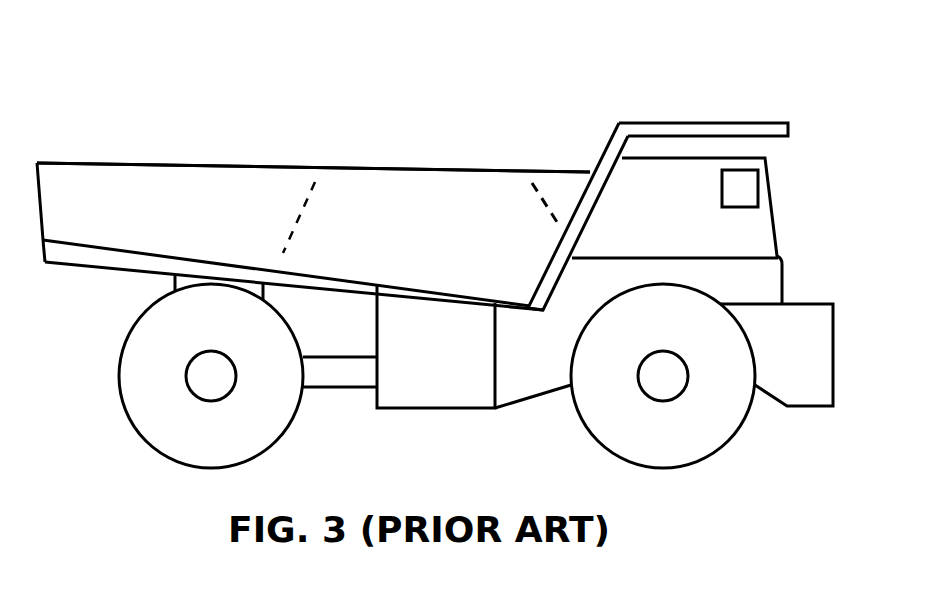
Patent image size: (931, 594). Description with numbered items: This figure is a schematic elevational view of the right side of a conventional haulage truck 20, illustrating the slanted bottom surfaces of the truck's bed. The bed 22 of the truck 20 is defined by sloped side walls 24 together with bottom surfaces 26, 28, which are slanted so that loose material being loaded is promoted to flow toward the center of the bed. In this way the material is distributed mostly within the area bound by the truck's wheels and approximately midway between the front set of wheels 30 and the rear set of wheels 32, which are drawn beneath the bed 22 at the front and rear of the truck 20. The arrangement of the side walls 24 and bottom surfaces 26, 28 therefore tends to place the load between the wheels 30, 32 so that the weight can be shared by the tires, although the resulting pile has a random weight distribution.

The truck 20 is at (728, 88).
The bed 22 is at (140, 162).
The sloped side walls 24 is at (390, 205).
The bottom surface 26 is at (527, 170).
The bottom surface 28 is at (322, 167).
The front wheels 30 is at (712, 438).
The rear wheels 32 is at (150, 408).